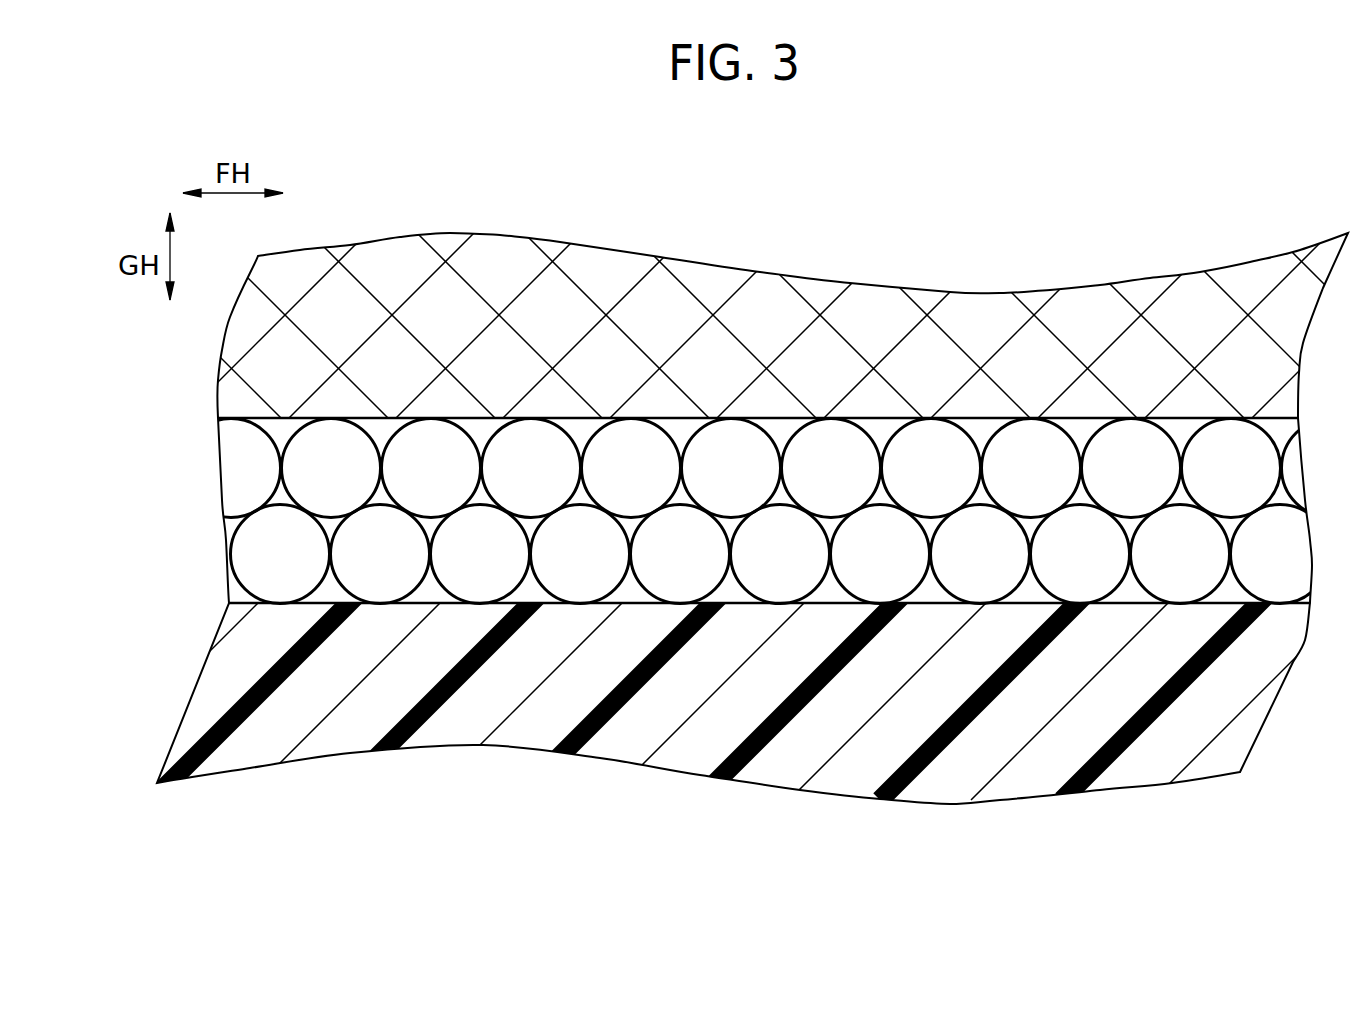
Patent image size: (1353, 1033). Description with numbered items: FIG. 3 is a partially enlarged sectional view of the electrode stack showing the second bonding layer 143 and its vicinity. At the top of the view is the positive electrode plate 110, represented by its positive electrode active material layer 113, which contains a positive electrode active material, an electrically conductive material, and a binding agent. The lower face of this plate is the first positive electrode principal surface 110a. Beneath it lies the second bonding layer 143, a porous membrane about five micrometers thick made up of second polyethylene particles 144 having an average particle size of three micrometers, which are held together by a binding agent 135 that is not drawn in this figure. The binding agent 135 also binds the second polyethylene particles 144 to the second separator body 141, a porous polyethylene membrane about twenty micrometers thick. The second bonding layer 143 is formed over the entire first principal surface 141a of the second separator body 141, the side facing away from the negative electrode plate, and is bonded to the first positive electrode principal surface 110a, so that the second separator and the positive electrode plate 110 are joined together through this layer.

The positive electrode active material layer 113 is at (610, 282).
The positive electrode plate 110 is at (714, 285).
The first positive electrode principal surface 110a is at (775, 422).
The second bonding layer 143 is at (768, 637).
The second polyethylene particles 144 is at (337, 465).
The binding agent 135 is at (768, 631).
The second separator body 141 is at (813, 745).
The first principal surface of second separator body 141a is at (933, 600).